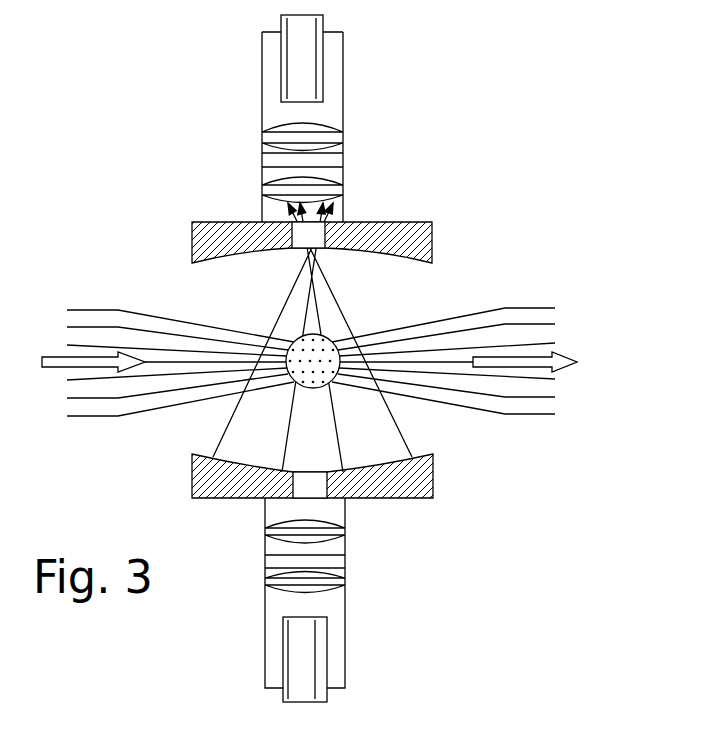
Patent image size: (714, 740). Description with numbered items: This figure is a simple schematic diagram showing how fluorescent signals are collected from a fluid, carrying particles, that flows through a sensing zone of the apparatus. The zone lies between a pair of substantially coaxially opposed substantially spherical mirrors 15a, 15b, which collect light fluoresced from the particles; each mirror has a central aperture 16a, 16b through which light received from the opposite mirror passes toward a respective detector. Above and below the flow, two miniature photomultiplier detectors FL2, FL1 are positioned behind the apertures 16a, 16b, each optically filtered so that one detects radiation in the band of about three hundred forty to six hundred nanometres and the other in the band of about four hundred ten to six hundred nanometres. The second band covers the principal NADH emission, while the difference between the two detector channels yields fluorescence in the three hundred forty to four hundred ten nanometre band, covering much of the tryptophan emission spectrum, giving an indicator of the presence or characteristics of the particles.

The photomultiplier detector FL2 is at (317, 57).
The photomultiplier detector FL1 is at (307, 662).
The upper wall plate 15a is at (330, 244).
The upper window 16a is at (297, 248).
The lower wall plate 15b is at (327, 500).
The lower window 16b is at (303, 490).